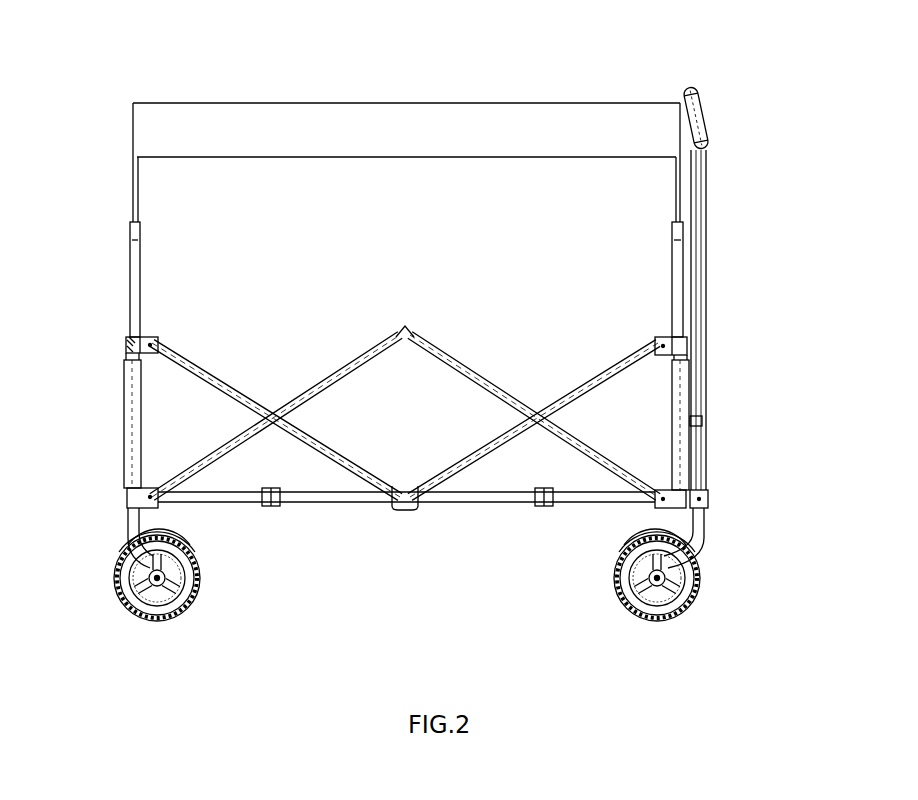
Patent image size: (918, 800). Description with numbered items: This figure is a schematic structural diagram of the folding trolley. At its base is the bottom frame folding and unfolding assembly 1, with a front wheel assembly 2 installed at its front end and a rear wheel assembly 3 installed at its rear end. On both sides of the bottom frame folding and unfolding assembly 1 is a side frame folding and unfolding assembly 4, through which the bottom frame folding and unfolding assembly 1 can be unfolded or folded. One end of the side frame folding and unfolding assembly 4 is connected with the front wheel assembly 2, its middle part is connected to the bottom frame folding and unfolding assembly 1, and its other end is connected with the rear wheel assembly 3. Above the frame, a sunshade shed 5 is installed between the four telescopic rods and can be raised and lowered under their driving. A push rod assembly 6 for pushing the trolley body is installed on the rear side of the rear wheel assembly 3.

The bottom frame folding and unfolding assembly 1 is at (332, 520).
The front wheel assembly 2 is at (119, 427).
The rear wheel assembly 3 is at (696, 446).
The side frame folding and unfolding assembly 4 is at (542, 460).
The sunshade shed 5 is at (392, 120).
The push rod assembly 6 is at (723, 365).